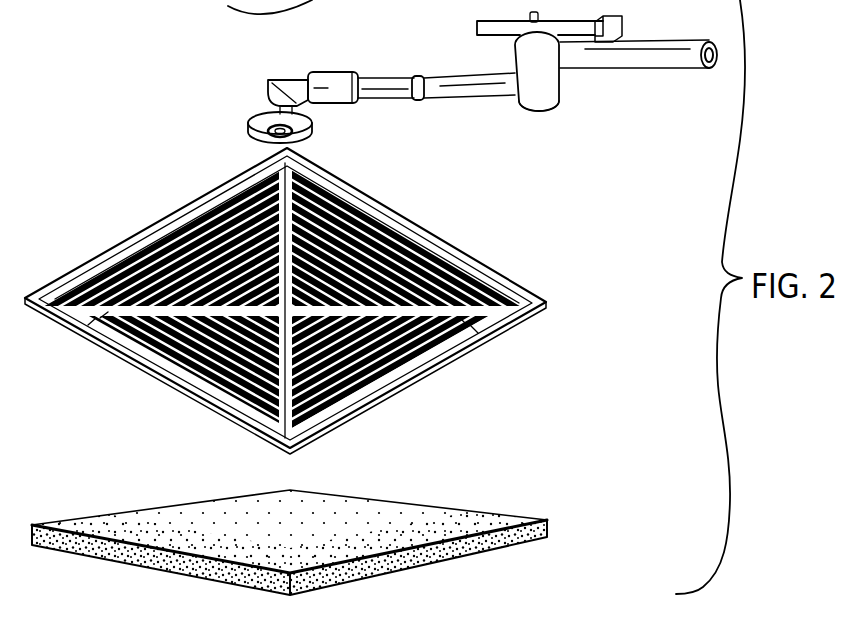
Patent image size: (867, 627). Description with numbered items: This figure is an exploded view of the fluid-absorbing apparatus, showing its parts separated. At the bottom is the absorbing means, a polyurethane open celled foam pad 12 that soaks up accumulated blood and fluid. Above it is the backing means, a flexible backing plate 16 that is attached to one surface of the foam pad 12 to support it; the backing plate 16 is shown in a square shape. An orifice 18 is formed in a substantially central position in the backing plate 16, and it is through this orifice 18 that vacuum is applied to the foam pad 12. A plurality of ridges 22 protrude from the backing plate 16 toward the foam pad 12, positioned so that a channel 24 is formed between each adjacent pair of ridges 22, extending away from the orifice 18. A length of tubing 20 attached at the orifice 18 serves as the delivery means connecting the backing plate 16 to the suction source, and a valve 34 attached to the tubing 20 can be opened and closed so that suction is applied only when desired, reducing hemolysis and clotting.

The foam pad 12 is at (407, 516).
The backing plate 16 is at (487, 267).
The orifice 18 is at (250, 177).
The tubing 20 is at (437, 96).
The ridges 22 is at (104, 300).
The channel 24 is at (106, 313).
The valve 34 is at (545, 72).